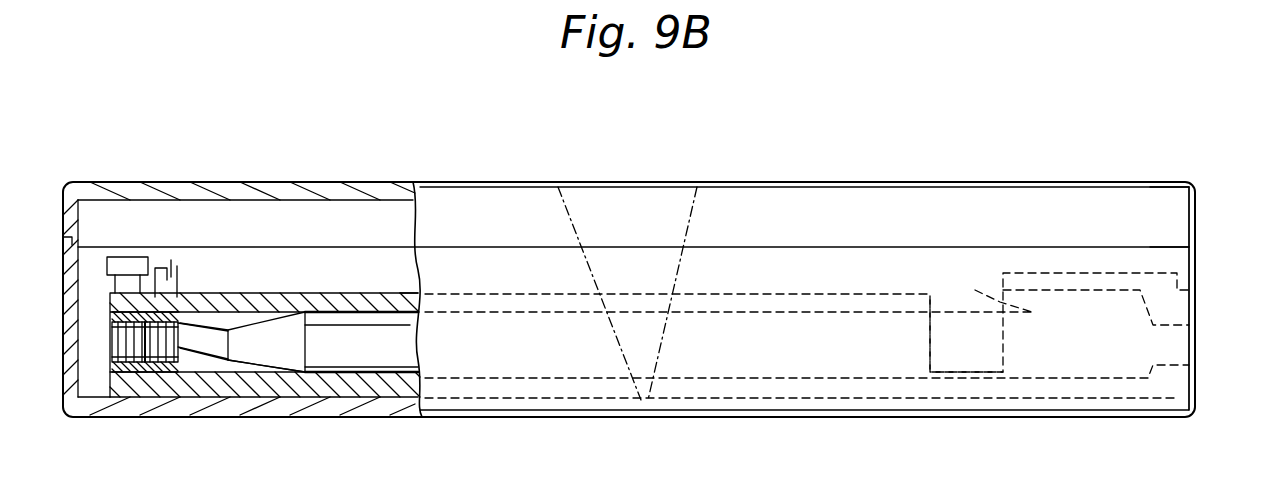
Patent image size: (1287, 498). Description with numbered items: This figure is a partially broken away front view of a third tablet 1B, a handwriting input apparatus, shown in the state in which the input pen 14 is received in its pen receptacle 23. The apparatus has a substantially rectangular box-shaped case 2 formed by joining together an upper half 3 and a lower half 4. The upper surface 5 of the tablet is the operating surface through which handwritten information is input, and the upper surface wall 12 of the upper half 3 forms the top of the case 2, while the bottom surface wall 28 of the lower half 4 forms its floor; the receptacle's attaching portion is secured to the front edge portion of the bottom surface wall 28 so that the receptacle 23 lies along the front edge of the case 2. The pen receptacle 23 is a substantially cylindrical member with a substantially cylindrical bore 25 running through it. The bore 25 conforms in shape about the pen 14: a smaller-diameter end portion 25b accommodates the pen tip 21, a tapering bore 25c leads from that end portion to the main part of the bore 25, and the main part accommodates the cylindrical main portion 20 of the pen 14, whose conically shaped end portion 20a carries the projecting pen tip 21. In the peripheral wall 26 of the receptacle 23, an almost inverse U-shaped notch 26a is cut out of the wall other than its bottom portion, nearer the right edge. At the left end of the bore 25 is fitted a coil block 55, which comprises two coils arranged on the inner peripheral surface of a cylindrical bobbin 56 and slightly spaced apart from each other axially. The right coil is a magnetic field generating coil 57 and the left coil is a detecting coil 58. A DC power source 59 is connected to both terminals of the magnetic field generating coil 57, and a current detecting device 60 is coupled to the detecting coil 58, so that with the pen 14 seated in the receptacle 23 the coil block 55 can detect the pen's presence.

The third tablet 1B is at (1049, 147).
The case 2 is at (1232, 176).
The upper half 3 is at (1180, 205).
The lower half 4 is at (1180, 260).
The upper surface 5 is at (720, 183).
The upper surface wall 12 is at (382, 188).
The input pen 14 is at (356, 325).
The main portion 20 is at (404, 313).
The end portion 20a is at (283, 296).
The pen tip 21 is at (223, 375).
The pen receptacle 23 is at (411, 303).
The cylindrical bore 25 is at (424, 329).
The end portion of the bore 25b is at (235, 370).
The tapering bore 25c is at (279, 362).
The peripheral wall 26 is at (424, 296).
The notch 26a is at (930, 322).
The bottom surface wall 28 is at (408, 400).
The coil block 55 is at (145, 372).
The cylindrical bobbin 56 is at (100, 330).
The magnetic field generating coil 57 is at (212, 296).
The detecting coil 58 is at (100, 385).
The DC power source 59 is at (176, 268).
The current detecting device 60 is at (129, 257).